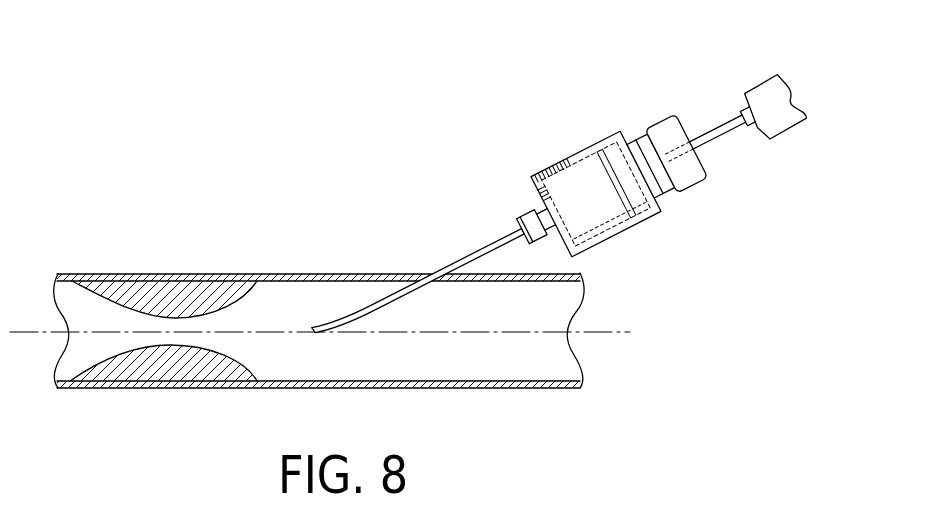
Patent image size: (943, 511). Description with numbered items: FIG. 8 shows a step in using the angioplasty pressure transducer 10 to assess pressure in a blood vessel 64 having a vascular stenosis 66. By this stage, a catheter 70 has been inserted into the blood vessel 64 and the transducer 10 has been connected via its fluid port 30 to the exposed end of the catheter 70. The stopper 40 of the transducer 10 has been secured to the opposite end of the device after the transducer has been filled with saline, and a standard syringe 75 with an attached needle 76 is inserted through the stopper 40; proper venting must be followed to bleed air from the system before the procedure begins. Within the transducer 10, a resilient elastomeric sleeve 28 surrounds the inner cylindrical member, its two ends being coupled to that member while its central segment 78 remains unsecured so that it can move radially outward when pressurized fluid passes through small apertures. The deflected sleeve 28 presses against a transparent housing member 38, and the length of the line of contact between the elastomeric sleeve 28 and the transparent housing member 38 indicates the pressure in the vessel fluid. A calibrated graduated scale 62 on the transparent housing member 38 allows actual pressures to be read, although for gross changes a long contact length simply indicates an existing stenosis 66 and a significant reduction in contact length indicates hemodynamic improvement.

The angioplasty pressure transducer 10 is at (540, 143).
The elastomeric sleeve 28 is at (587, 237).
The fluid port 30 is at (513, 227).
The transparent housing member 38 is at (661, 214).
The stopper 40 is at (668, 130).
The calibrated graduated scale 62 is at (600, 148).
The blood vessel 64 is at (313, 222).
The vascular stenosis 66 is at (177, 293).
The catheter 70 is at (372, 300).
The syringe 75 is at (764, 84).
The needle 76 is at (723, 140).
The central segment 78 is at (633, 222).